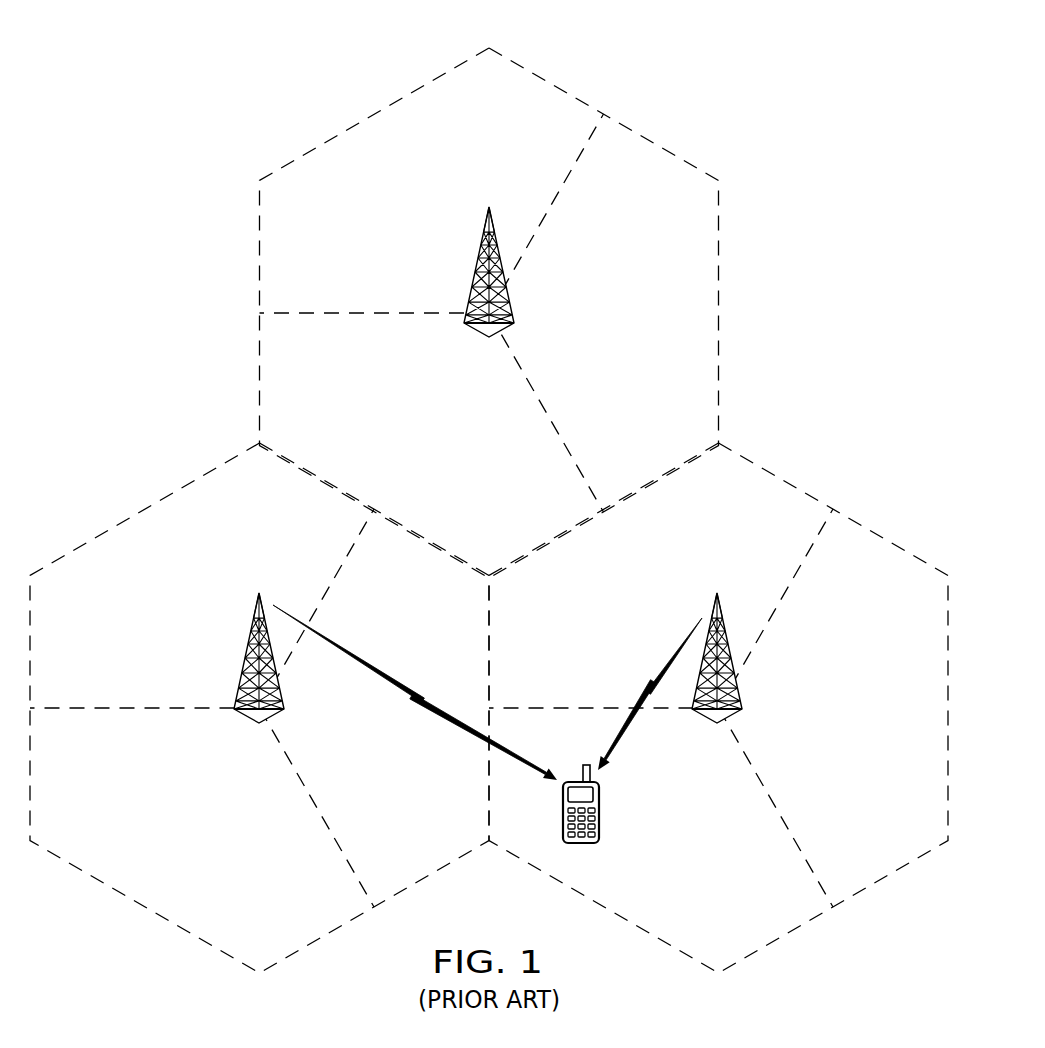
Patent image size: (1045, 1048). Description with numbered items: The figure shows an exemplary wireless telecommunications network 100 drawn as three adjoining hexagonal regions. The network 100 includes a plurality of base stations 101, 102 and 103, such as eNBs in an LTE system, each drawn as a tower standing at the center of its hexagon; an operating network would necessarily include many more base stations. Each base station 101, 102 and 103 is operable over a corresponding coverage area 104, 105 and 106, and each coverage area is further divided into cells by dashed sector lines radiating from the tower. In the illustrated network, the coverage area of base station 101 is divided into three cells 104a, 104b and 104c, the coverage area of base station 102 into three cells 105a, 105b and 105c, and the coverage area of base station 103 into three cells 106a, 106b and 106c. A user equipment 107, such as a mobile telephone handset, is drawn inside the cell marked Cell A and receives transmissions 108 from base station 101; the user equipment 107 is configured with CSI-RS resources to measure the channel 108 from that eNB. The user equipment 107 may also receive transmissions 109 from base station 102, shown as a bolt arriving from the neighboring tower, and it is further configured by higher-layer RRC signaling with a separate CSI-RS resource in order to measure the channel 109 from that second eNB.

The wireless telecommunications network 100 is at (260, 60).
The base station 101 is at (742, 688).
The base station 102 is at (245, 657).
The base station 103 is at (475, 270).
The coverage area 104 is at (793, 930).
The cell 104a is at (712, 873).
The cell 104b is at (887, 723).
The cell 104c is at (678, 603).
The coverage area 105 is at (158, 915).
The cell 105a is at (220, 845).
The cell 105b is at (407, 795).
The cell 105c is at (220, 602).
The coverage area 106 is at (642, 136).
The cell 106a is at (450, 450).
The cell 106b is at (657, 325).
The cell 106c is at (450, 205).
The user equipment 107 is at (583, 780).
The transmissions 108 is at (633, 725).
The transmissions 109 is at (417, 696).